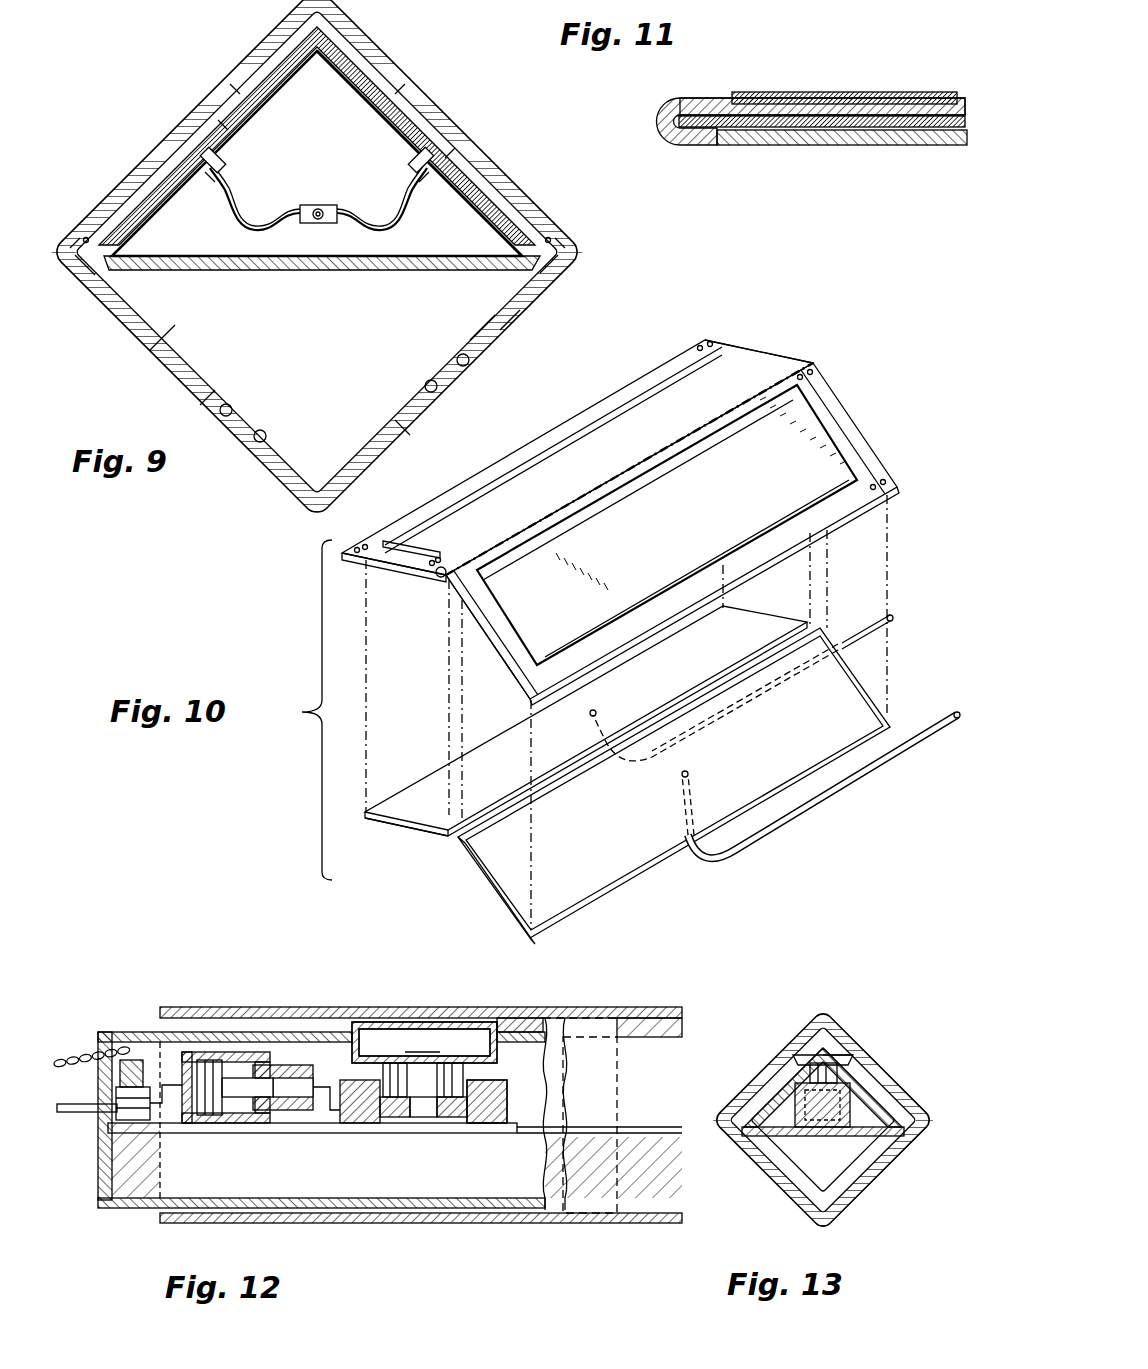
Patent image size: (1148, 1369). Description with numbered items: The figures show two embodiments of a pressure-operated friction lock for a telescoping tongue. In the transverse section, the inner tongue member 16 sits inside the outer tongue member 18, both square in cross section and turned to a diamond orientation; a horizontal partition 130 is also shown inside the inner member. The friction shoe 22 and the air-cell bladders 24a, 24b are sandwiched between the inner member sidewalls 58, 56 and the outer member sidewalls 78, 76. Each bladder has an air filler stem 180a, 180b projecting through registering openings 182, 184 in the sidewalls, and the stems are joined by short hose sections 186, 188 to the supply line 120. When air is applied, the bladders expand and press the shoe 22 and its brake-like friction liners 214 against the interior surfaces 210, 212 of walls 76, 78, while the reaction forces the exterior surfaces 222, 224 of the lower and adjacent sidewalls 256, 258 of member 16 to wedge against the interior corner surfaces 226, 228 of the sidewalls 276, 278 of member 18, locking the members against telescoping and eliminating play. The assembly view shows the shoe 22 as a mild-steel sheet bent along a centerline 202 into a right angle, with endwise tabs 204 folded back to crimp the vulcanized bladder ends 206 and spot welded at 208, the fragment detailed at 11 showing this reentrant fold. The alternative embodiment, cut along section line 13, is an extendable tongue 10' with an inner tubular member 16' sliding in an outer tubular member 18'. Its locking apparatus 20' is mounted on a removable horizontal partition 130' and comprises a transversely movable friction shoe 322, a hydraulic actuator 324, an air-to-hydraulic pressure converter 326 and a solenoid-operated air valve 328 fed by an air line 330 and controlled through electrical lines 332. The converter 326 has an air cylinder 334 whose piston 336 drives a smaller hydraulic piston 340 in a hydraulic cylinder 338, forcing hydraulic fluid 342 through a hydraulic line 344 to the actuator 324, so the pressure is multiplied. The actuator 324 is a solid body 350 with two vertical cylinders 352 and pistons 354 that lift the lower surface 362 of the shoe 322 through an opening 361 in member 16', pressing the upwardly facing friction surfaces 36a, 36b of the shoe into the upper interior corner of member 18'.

In FIG. 9, the inner tongue member 16 is at (317, 259).
In FIG. 9, the outer tongue member 18 is at (527, 325).
In FIG. 9, the friction shoe 22 is at (73, 245).
In FIG. 11, the friction shoe 22 is at (706, 100).
In FIG. 10, the friction shoe 22 is at (840, 422).
In FIG. 9, the air-cell bladder 24a is at (560, 262).
In FIG. 11, the air-cell bladder 24a is at (812, 146).
In FIG. 10, the air-cell bladder 24a is at (432, 783).
In FIG. 9, the air-cell bladder 24b is at (85, 272).
In FIG. 10, the air-cell bladder 24b is at (630, 858).
In FIG. 9, the sidewall 56 is at (354, 90).
In FIG. 9, the sidewall 58 is at (284, 90).
In FIG. 9, the sidewall 76 is at (412, 80).
In FIG. 9, the sidewall 78 is at (227, 80).
In FIG. 9, the supply line 120 is at (318, 224).
In FIG. 9, the partition bar 130 is at (322, 280).
In FIG. 9, the air filler stem 180a is at (408, 163).
In FIG. 9, the air filler stem 180b is at (228, 162).
In FIG. 9, the registering opening 182 is at (418, 178).
In FIG. 9, the registering opening 184 is at (213, 175).
In FIG. 9, the air hose section 186 is at (390, 226).
In FIG. 10, the air hose section 186 is at (872, 641).
In FIG. 9, the air hose section 188 is at (250, 226).
In FIG. 10, the air hose section 188 is at (822, 808).
In FIG. 10, the centerline 202 is at (752, 375).
In FIG. 11, the endwise projecting tab 204 is at (688, 146).
In FIG. 10, the endwise projecting tab 204 is at (460, 605).
In FIG. 11, the bladder end 206 is at (660, 126).
In FIG. 10, the bladder end 206 is at (478, 862).
In FIG. 10, the spot weld 208 is at (488, 660).
In FIG. 9, the interior surface 210 is at (452, 150).
In FIG. 9, the interior surface 212 is at (220, 125).
In FIG. 9, the friction liner 214 is at (172, 172).
In FIG. 11, the friction liner 214 is at (800, 94).
In FIG. 10, the friction liner 214 is at (558, 476).
In FIG. 9, the exterior surface 222 is at (456, 357).
In FIG. 9, the exterior surface 224 is at (232, 403).
In FIG. 9, the interior corner surface 226 is at (438, 385).
In FIG. 9, the interior corner surface 228 is at (258, 443).
In FIG. 9, the lower sidewall 256 is at (480, 328).
In FIG. 9, the adjacent sidewall 258 is at (160, 338).
In FIG. 9, the lower sidewall 276 is at (398, 422).
In FIG. 9, the adjacent sidewall 278 is at (206, 398).
In FIG. 10, the section line 11 is at (514, 612).
In FIG. 12, the section line 13 is at (490, 1000).
In FIG. 12, the extendable tongue 10' is at (194, 950).
In FIG. 13, the extendable tongue 10' is at (856, 973).
In FIG. 12, the inner tubular member 16' is at (383, 1140).
In FIG. 13, the inner tubular member 16' is at (823, 1120).
In FIG. 12, the outer tubular member 18' is at (390, 1004).
In FIG. 13, the outer tubular member 18' is at (839, 1087).
In FIG. 12, the pressure-operated friction locking apparatus 20' is at (231, 1181).
In FIG. 12, the friction surface 36a is at (424, 1042).
In FIG. 13, the friction surface 36a is at (803, 1055).
In FIG. 13, the friction surface 36b is at (845, 1057).
In FIG. 12, the partition 130' is at (395, 1153).
In FIG. 13, the partition 130' is at (823, 1149).
In FIG. 12, the friction shoe 322 is at (392, 1030).
In FIG. 12, the hydraulic actuator 324 is at (518, 1110).
In FIG. 13, the hydraulic actuator 324 is at (866, 1111).
In FIG. 12, the air pressure-to-hydraulic pressure converter 326 is at (272, 1066).
In FIG. 12, the solenoid-operated air valve 328 is at (140, 1052).
In FIG. 12, the air line 330 is at (70, 1115).
In FIG. 12, the electrical lines 332 is at (78, 1058).
In FIG. 12, the air cylinder 334 is at (195, 1120).
In FIG. 12, the air-operated piston 336 is at (200, 1118).
In FIG. 12, the hydraulic cylinder 338 is at (300, 1105).
In FIG. 12, the hydraulic piston 340 is at (283, 1107).
In FIG. 12, the hydraulic fluid 342 is at (318, 1084).
In FIG. 12, the hydraulic line 344 is at (334, 1112).
In FIG. 12, the solid body 350 is at (487, 1118).
In FIG. 12, the cylinders 352 is at (423, 1092).
In FIG. 12, the pistons 354 is at (458, 1080).
In FIG. 13, the pistons 354 is at (812, 1073).
In FIG. 12, the opening 361 is at (495, 1012).
In FIG. 12, the lower surface 362 is at (377, 1063).
In FIG. 13, the lower surface 362 is at (800, 1083).